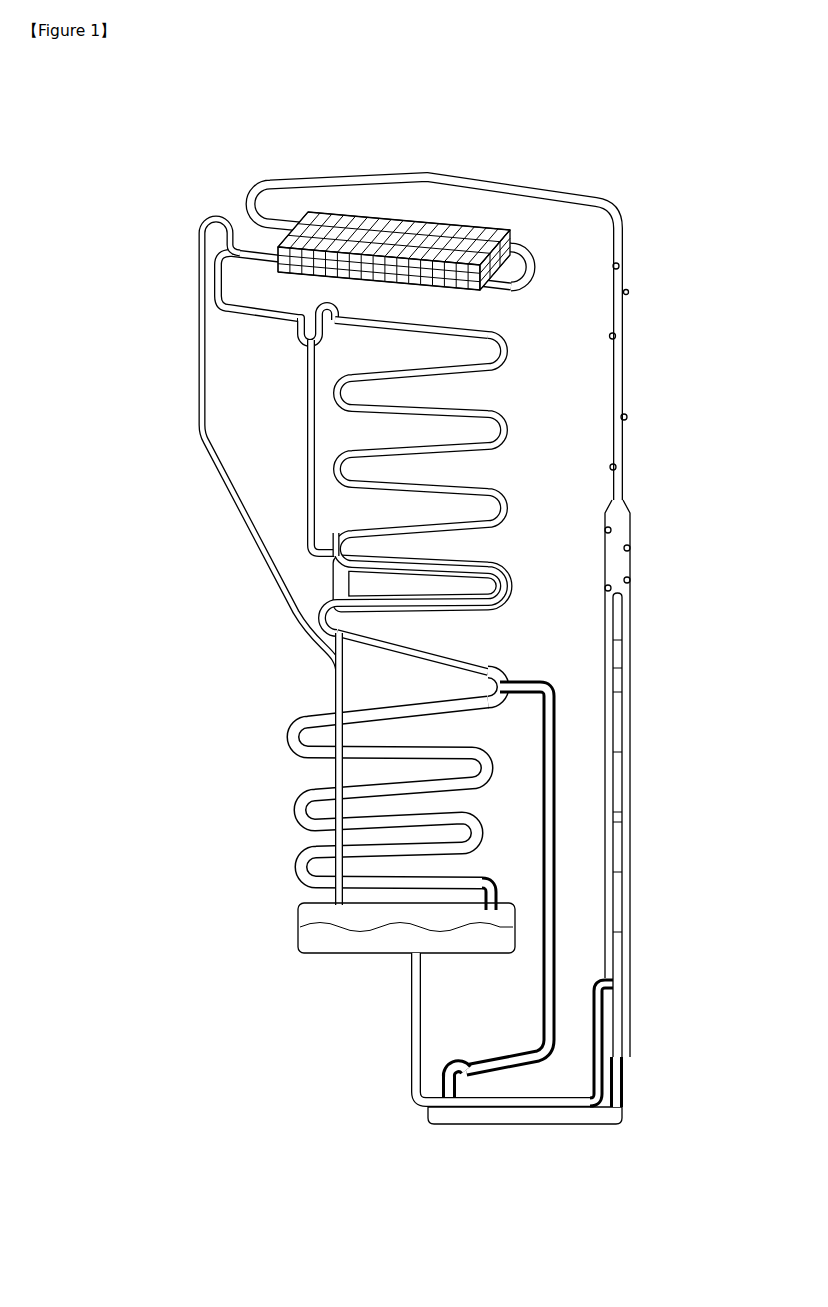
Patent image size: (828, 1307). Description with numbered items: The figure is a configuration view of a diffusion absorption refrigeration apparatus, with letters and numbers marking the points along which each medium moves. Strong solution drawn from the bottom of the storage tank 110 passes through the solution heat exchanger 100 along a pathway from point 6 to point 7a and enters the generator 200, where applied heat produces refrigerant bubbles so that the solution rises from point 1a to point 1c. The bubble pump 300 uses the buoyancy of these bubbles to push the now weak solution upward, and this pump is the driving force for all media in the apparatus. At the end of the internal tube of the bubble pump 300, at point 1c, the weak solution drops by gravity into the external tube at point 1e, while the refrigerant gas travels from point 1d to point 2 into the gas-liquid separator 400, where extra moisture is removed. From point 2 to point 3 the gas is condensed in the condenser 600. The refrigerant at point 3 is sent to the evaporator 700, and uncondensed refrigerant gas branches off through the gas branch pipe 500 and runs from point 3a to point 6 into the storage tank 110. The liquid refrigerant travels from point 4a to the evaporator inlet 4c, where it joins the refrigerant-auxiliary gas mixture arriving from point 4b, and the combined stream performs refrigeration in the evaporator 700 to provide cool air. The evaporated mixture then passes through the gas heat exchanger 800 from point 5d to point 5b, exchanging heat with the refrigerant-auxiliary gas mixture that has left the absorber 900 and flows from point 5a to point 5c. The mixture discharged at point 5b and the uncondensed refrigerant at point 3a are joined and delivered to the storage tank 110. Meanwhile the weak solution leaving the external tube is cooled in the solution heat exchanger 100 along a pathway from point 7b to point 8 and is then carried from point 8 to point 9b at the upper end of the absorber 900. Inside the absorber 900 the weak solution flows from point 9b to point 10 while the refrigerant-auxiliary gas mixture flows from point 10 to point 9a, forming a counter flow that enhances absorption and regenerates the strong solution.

The gas-liquid separator 400 is at (457, 295).
The condenser inlet point 2 is at (452, 170).
The condenser 600 is at (348, 215).
The gas branch pipe discharge point 3a is at (213, 212).
The gas branch pipe 500 is at (197, 330).
The condenser outlet point 3 is at (258, 258).
The liquid refrigerant pathway point 4a is at (330, 342).
The refrigerant-auxiliary mixture pathway point 4b is at (320, 306).
The evaporator inlet 4c is at (352, 322).
The refrigerant gas transfer point 1d is at (626, 356).
The evaporator 700 is at (502, 455).
The evaporator outlet point 5d is at (336, 530).
The bubble pump end 1c is at (628, 560).
The gas heat exchanger outlet point 5c is at (316, 556).
The external tube inflow point 1e is at (629, 619).
The gas heat exchanger inlet point 5a is at (318, 614).
The gas heat exchanger discharge point 5b is at (343, 621).
The gas heat exchanger 800 is at (508, 607).
The absorber mixture outlet point 9a is at (504, 667).
The absorber upper end inlet point 9b is at (511, 698).
The bubble pump 300 is at (661, 778).
The absorber 900 is at (478, 790).
The absorber pathway point 10 is at (494, 884).
The storage tank 110 is at (296, 952).
The storage tank bottom point 6 is at (410, 986).
The strong solution rising start point 1a is at (625, 991).
The generator 200 is at (664, 1041).
The weak solution outlet point 8 is at (455, 1093).
The weak solution inlet point 7b is at (592, 1090).
The strong solution outlet point 7a is at (625, 1090).
The solution heat exchanger 100 is at (502, 1076).